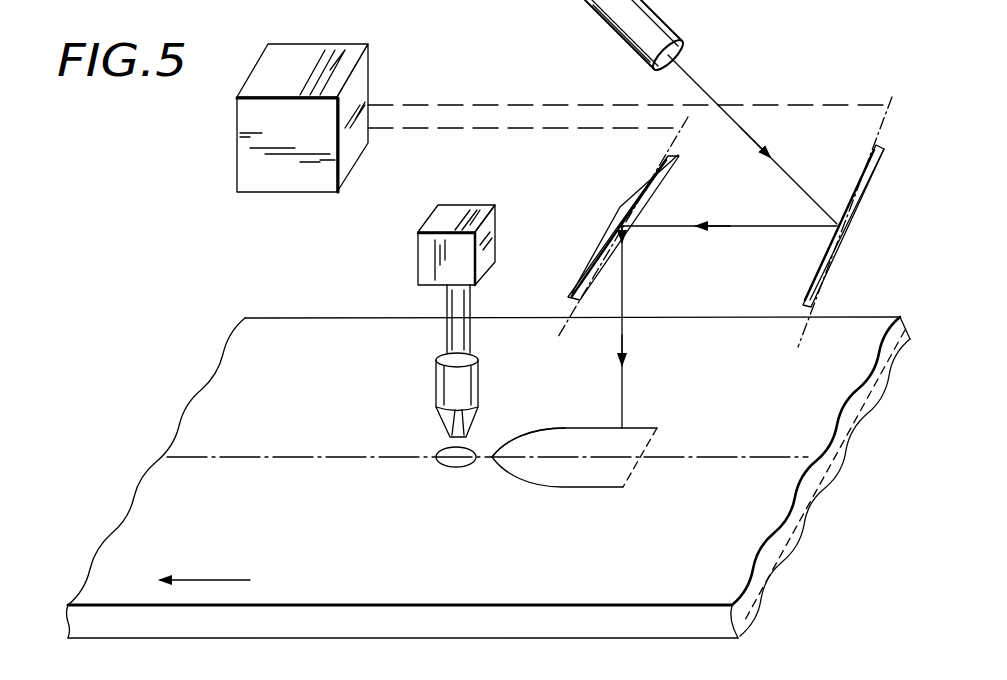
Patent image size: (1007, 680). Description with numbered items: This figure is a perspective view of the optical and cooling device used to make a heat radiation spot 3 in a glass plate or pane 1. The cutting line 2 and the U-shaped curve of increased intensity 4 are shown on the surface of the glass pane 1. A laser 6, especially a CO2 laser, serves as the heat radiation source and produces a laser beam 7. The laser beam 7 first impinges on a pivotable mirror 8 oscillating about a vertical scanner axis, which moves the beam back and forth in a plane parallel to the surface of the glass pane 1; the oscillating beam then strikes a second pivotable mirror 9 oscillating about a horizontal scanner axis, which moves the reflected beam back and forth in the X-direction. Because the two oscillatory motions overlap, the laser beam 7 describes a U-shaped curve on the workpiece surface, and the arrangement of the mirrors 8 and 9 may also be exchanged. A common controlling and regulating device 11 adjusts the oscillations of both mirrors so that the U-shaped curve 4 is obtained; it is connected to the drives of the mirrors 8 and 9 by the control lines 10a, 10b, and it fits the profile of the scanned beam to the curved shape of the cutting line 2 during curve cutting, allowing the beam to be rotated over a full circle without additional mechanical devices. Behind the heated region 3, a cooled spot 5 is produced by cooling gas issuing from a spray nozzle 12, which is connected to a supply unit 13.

The glass plate 1 is at (268, 338).
The cutting line 2 is at (758, 460).
The heat radiation spot 3 is at (553, 478).
The U-shaped curve of increased intensity 4 is at (548, 428).
The cooled spot 5 is at (450, 468).
The laser 6 is at (658, 35).
The laser beam 7 is at (708, 93).
The pivotable mirror 8 is at (842, 238).
The second pivotable mirror 9 is at (610, 222).
The control line 10a is at (515, 100).
The control line 10b is at (458, 134).
The controlling and regulating device 11 is at (252, 163).
The spray nozzle 12 is at (440, 385).
The supply unit 13 is at (428, 253).